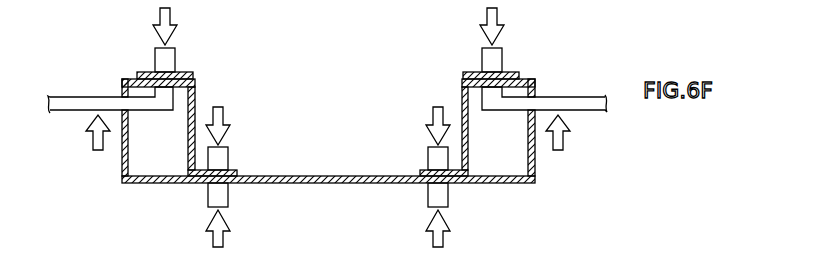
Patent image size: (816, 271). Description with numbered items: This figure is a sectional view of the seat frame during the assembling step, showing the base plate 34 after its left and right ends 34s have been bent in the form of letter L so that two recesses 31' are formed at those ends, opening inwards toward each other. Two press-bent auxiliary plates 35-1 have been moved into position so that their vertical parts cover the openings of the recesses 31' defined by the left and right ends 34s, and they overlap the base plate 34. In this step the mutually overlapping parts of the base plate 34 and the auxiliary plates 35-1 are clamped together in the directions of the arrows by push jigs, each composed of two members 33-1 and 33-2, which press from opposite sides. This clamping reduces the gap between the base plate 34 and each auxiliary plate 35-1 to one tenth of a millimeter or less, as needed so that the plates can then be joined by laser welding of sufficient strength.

The base plate 34 is at (490, 212).
The left and right ends 34s is at (122, 163).
The auxiliary plates 35-1 is at (193, 78).
The push jig member 33-2 is at (173, 53).
The push jig member 33-1 is at (74, 104).
The recesses 31' is at (342, 198).